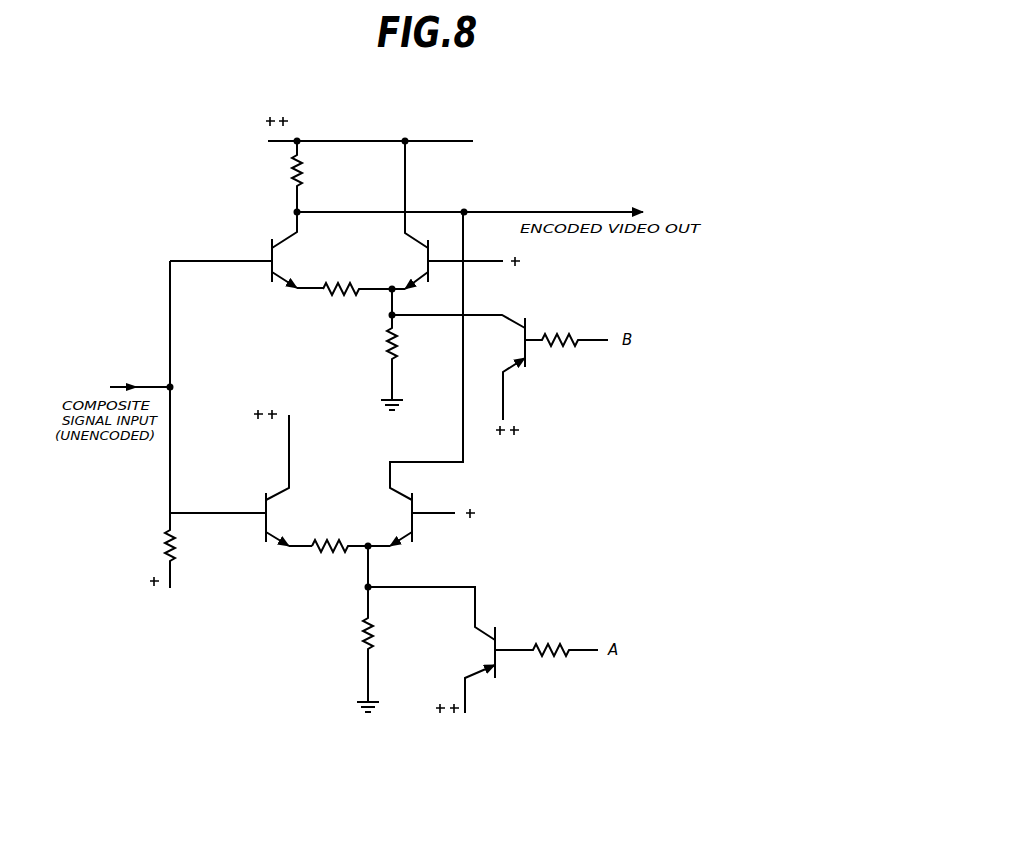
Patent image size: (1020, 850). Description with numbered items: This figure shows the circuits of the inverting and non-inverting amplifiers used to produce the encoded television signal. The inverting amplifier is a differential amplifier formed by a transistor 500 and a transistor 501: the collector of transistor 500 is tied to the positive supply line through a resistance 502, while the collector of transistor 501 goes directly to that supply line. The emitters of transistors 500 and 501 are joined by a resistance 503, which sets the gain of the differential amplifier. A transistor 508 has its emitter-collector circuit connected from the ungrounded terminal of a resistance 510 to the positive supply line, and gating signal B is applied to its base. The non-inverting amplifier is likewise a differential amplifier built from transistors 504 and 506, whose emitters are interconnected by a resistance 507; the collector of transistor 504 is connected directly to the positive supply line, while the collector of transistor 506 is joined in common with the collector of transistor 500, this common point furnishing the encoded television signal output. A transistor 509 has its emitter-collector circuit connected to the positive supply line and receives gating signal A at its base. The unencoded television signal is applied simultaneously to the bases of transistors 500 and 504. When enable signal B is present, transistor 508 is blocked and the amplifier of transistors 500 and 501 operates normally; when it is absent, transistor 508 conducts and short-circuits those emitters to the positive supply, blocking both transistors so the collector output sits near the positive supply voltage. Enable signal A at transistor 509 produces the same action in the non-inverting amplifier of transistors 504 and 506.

The transistor 500 is at (270, 272).
The transistor 501 is at (412, 239).
The resistance 502 is at (303, 178).
The resistance 503 is at (334, 296).
The transistor 504 is at (266, 532).
The transistor 506 is at (414, 506).
The resistance 507 is at (337, 552).
The transistor 508 is at (530, 327).
The transistor 509 is at (497, 637).
The resistance 510 is at (378, 637).